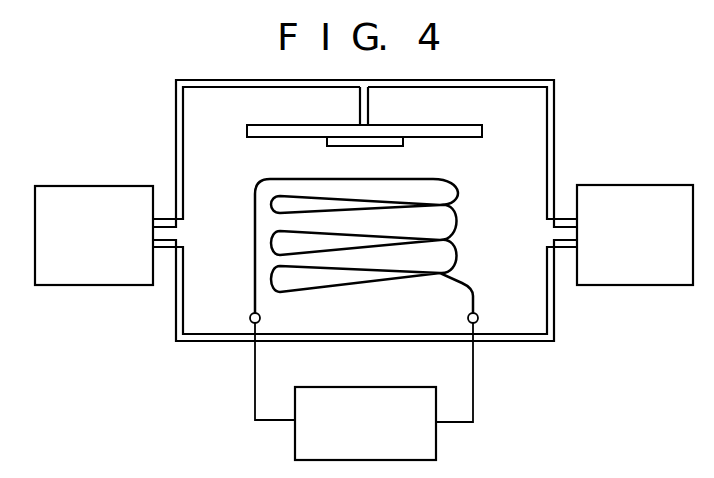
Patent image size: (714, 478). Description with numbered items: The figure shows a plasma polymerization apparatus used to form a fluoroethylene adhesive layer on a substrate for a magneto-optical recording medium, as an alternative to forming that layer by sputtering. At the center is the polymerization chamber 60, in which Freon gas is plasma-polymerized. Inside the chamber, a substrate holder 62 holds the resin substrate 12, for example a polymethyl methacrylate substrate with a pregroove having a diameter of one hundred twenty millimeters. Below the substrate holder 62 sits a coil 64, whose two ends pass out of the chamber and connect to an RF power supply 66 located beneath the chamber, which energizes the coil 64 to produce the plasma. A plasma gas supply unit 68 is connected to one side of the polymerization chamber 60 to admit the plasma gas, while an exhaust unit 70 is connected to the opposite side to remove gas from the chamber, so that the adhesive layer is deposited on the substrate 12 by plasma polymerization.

The resin substrate 12 is at (403, 142).
The polymerization chamber 60 is at (556, 98).
The substrate holder 62 is at (483, 130).
The coil 64 is at (457, 256).
The RF power supply 66 is at (436, 450).
The plasma gas supply unit 68 is at (122, 186).
The exhaust unit 70 is at (660, 185).